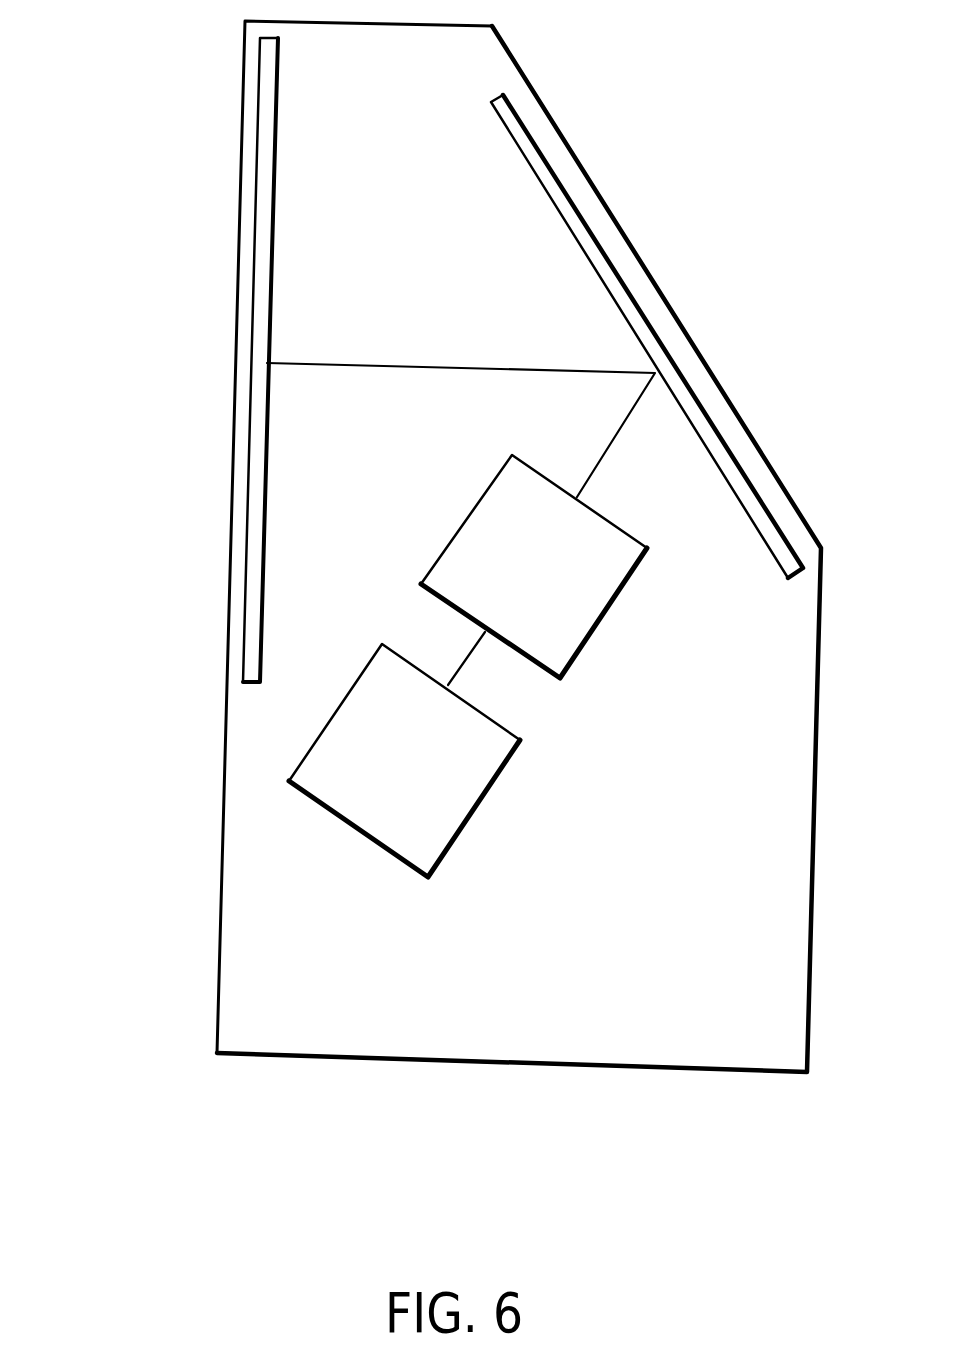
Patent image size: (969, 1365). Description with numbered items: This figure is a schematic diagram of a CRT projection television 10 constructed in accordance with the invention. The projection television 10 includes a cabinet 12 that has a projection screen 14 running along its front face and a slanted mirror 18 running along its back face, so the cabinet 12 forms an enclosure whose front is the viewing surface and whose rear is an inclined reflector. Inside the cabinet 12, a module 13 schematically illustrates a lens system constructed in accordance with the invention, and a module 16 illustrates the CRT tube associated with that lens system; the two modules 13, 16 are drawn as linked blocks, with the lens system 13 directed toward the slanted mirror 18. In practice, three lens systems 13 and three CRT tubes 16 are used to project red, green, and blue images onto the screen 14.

The CRT projection television 10 is at (128, 622).
The cabinet 12 is at (815, 768).
The lens system module 13 is at (602, 620).
The projection screen 14 is at (275, 191).
The CRT tube 16 is at (477, 810).
The slanted mirror 18 is at (547, 201).